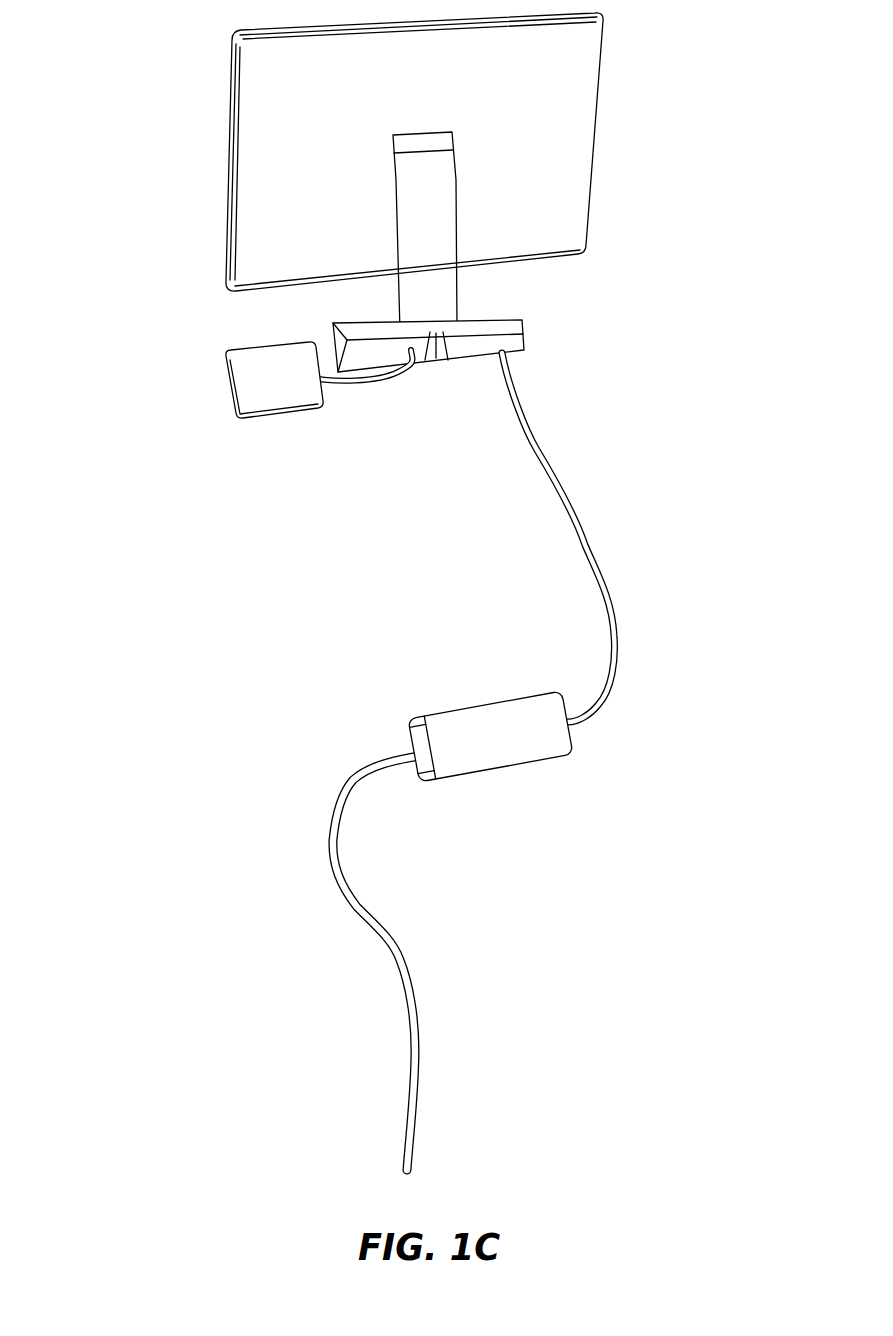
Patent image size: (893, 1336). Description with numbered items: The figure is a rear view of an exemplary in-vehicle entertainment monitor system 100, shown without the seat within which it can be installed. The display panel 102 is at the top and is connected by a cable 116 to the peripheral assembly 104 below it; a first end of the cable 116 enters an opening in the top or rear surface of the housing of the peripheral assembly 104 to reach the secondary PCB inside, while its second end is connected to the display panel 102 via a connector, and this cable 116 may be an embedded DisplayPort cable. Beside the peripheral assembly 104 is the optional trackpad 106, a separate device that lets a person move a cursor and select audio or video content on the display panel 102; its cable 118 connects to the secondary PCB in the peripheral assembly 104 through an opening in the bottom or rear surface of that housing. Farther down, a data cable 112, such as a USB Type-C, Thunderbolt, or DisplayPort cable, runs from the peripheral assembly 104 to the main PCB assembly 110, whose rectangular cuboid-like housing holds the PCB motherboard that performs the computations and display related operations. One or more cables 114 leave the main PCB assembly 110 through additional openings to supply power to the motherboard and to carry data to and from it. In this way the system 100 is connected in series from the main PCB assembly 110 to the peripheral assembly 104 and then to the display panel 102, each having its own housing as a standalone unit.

The IVE monitor system 100 is at (702, 135).
The display panel 102 is at (238, 113).
The peripheral assembly 104 is at (527, 331).
The trackpad 106 is at (228, 385).
The main PCB assembly 110 is at (565, 745).
The data cable 112 is at (568, 495).
The cables 114 is at (335, 868).
The cable 116 is at (445, 286).
The cable 118 is at (385, 375).